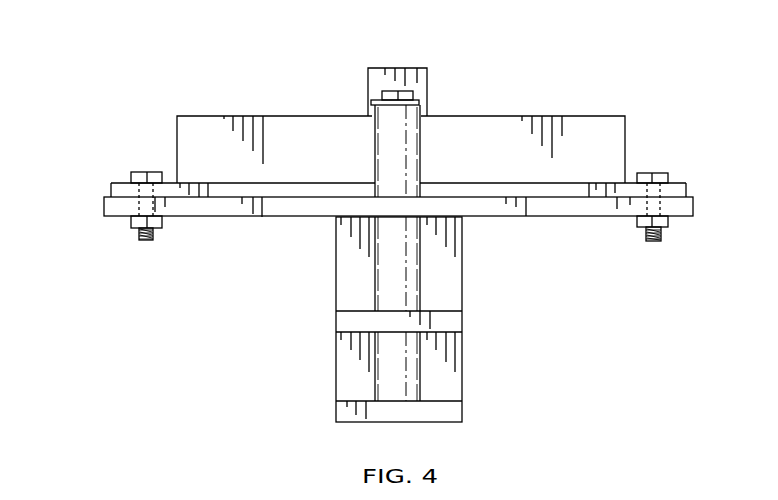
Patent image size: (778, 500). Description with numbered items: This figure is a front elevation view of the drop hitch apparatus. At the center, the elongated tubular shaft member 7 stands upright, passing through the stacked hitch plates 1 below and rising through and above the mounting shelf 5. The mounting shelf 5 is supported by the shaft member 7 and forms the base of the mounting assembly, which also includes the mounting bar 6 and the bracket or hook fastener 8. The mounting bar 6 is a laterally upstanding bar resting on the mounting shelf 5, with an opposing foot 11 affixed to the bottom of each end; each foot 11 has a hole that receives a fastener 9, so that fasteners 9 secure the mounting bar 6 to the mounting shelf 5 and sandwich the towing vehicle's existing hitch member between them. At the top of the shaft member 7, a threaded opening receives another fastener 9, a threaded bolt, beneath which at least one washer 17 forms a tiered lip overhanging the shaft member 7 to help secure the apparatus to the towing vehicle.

The hitch plate 1 is at (340, 412).
The mounting shelf 5 is at (563, 216).
The mounting bar 6 is at (575, 116).
The shaft member 7 is at (422, 125).
The hook fastener 8 is at (419, 68).
The fastener 9 is at (138, 171).
The foot 11 is at (680, 183).
The washer 17 is at (372, 100).